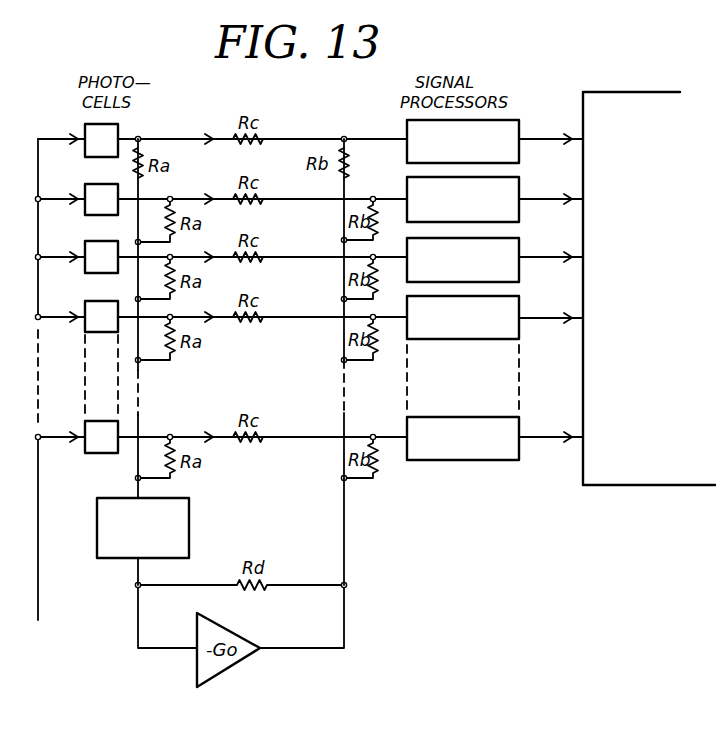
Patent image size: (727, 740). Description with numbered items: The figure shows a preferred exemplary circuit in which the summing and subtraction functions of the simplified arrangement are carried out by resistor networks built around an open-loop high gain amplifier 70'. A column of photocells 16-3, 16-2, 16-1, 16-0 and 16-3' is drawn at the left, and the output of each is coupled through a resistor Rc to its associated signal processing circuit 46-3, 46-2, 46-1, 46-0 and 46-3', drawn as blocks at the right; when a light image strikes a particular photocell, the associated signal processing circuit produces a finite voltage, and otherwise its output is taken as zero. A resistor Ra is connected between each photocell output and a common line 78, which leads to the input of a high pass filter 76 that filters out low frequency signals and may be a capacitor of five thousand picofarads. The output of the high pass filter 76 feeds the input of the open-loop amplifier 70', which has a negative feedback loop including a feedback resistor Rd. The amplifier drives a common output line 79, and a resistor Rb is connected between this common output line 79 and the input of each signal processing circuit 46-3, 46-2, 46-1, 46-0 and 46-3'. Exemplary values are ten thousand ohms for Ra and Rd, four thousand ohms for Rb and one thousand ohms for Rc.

The photocell 16-3 is at (79, 131).
The photocell 16-2 is at (87, 184).
The photocell 16-1 is at (87, 241).
The photocell 16-0 is at (87, 301).
The photocell 16-3' is at (79, 432).
The common line 78 is at (138, 282).
The common output line 79 is at (344, 305).
The high pass filter 76 is at (97, 509).
The open-loop high gain amplifier 70' is at (235, 653).
The signal processing circuit 46-3 is at (488, 135).
The signal processing circuit 46-2 is at (519, 190).
The signal processing circuit 46-1 is at (519, 250).
The signal processing circuit 46-0 is at (519, 310).
The signal processing circuit 46-3' is at (490, 431).